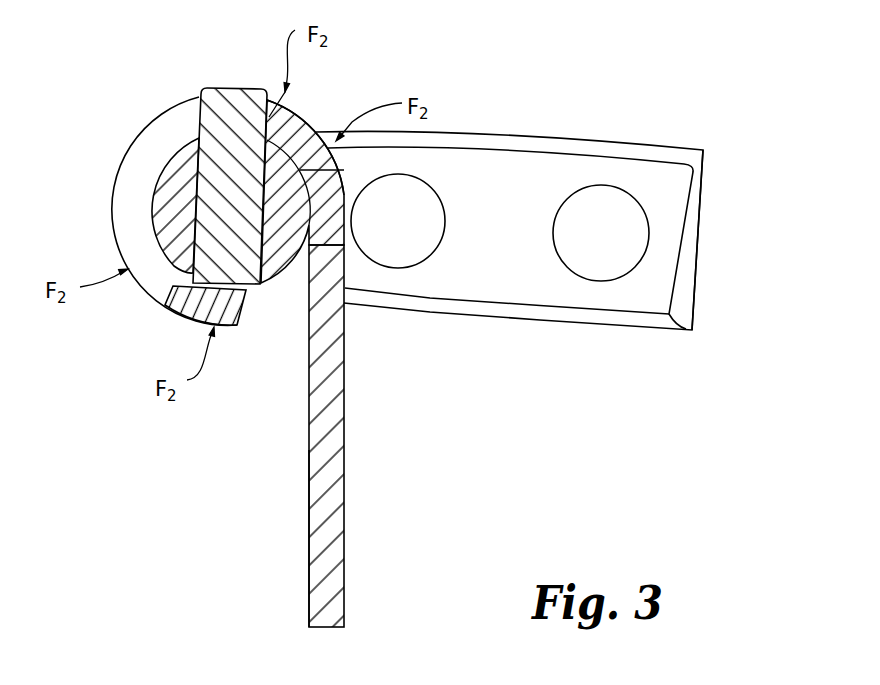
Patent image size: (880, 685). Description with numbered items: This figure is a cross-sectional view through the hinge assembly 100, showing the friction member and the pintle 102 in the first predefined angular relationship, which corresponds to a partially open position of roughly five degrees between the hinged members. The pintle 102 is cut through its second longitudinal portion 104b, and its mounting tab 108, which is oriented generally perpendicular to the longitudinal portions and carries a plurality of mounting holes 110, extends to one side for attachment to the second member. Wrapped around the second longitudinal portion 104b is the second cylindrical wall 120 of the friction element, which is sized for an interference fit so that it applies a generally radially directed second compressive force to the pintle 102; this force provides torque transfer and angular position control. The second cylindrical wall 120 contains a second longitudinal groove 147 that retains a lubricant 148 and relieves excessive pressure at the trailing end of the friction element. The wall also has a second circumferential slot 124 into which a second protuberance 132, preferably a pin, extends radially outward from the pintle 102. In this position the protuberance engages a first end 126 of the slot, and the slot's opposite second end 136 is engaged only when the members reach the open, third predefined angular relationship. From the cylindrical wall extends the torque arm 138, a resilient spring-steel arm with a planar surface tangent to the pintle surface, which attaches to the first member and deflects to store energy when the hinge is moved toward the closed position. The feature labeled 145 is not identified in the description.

The hinge assembly 100 is at (486, 331).
The pintle 102 is at (509, 209).
The second longitudinal portion 104b is at (307, 232).
The mounting tab 108 is at (705, 157).
The mounting holes 110 is at (422, 234).
The second cylindrical wall 120 is at (314, 137).
The second circumferential slot 124 is at (160, 132).
The first end 126 is at (290, 122).
The second protuberance 132 is at (237, 88).
The second end 136 is at (174, 286).
The torque arm 138 is at (350, 483).
The bar inner surface 145 is at (308, 527).
The second longitudinal groove 147 is at (182, 270).
The lubricant 148 is at (167, 263).